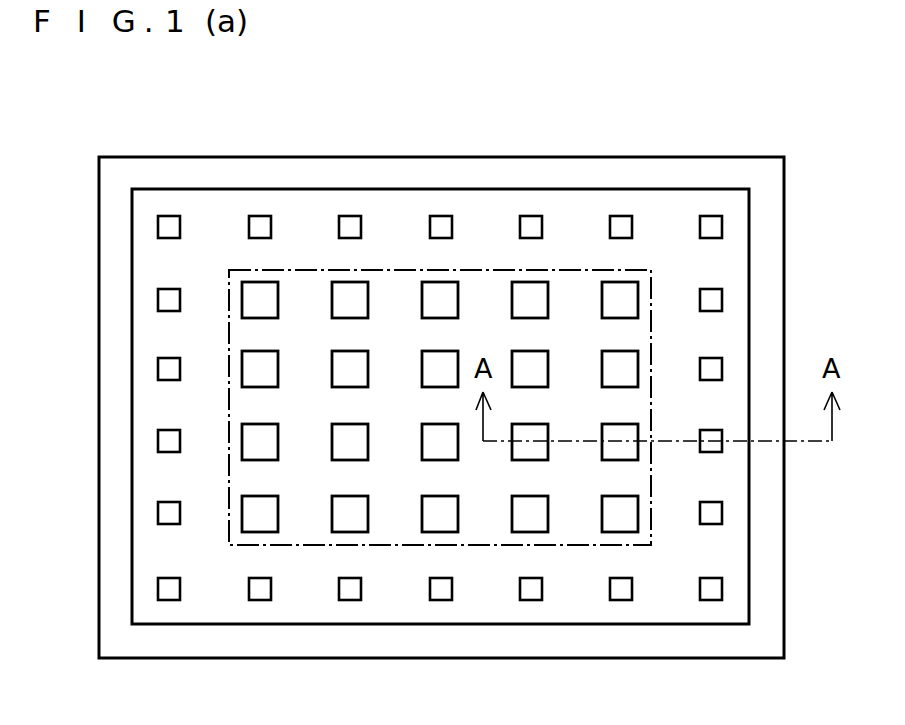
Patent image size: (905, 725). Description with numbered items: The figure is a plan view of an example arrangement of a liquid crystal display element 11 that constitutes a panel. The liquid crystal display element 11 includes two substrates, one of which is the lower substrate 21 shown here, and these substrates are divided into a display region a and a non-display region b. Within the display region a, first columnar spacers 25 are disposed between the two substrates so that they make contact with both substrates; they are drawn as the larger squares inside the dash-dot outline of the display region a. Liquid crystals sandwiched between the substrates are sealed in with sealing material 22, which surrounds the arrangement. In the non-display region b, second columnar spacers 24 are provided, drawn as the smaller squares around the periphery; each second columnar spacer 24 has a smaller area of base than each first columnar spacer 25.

The liquid crystal display element 11 is at (758, 90).
The lower substrate 21 is at (730, 253).
The sealing material 22 is at (773, 318).
The second columnar spacers 24 is at (713, 506).
The first columnar spacers 25 is at (513, 517).
The display region a is at (493, 270).
The non-display region b is at (573, 212).